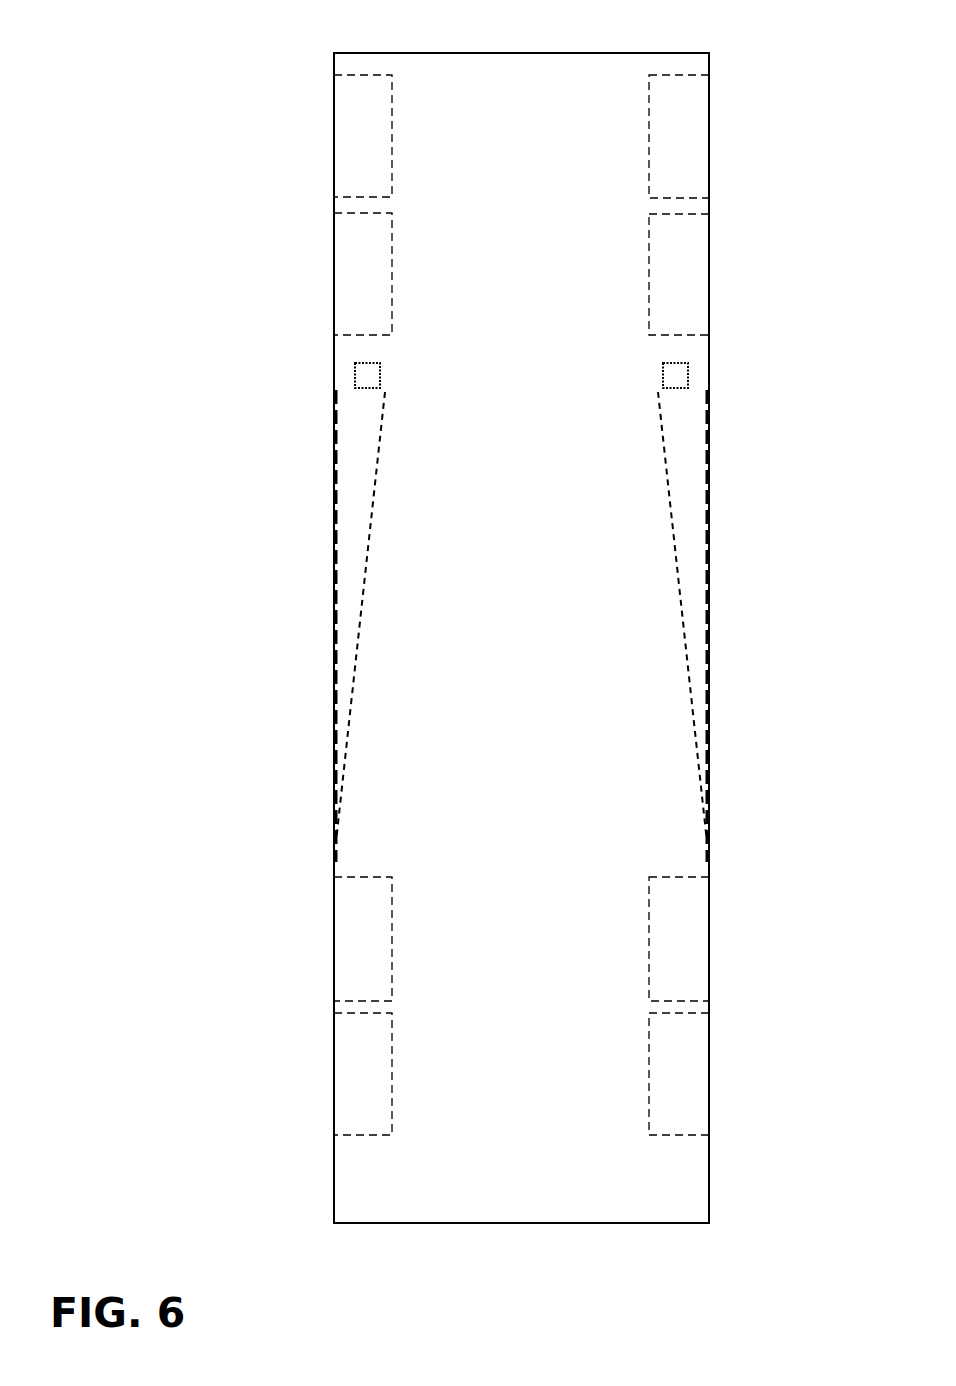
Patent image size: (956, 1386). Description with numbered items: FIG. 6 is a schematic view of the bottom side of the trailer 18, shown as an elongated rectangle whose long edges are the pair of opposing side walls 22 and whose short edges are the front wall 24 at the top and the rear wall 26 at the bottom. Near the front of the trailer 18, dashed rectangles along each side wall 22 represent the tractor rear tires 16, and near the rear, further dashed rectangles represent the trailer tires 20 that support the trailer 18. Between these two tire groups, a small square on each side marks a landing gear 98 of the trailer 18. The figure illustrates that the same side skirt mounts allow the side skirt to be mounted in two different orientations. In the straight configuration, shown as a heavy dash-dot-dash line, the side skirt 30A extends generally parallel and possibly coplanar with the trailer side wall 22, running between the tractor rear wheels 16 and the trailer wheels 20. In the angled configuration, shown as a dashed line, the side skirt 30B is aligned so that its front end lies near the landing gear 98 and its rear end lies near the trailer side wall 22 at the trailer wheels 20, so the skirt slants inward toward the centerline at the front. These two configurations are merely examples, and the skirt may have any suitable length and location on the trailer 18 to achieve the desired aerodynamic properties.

The tractor rear tires 16 is at (358, 102).
The trailer 18 is at (720, 187).
The trailer tires 20 is at (355, 945).
The side walls 22 is at (333, 322).
The front wall 24 is at (490, 53).
The rear wall 26 is at (503, 1223).
The side skirt in straight configuration 30A is at (333, 572).
The side skirt in angled configuration 30B is at (382, 527).
The landing gear 98 is at (365, 376).